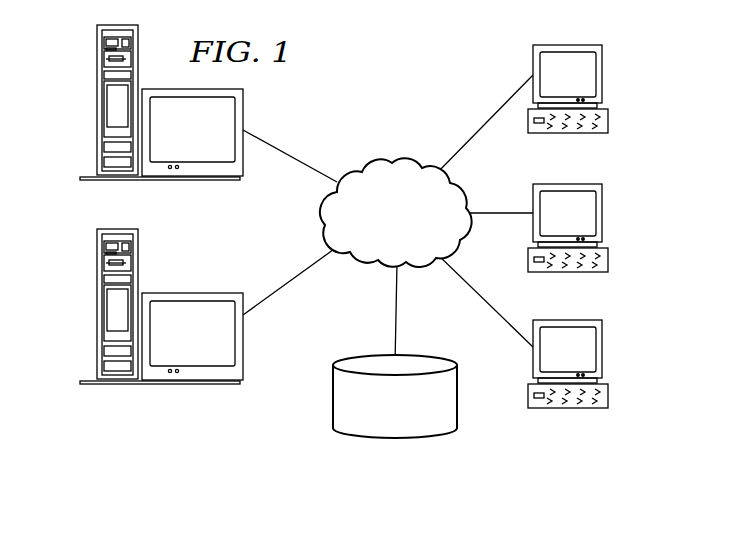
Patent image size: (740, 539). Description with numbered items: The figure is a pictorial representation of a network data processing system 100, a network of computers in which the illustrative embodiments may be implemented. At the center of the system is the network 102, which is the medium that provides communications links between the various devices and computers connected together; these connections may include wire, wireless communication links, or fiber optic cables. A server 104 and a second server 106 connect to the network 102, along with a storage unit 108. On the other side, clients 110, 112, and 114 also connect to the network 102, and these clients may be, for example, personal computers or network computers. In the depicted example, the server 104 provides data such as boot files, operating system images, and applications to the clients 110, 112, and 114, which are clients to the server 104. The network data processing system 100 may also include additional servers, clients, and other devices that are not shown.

The network data processing system 100 is at (444, 56).
The network 102 is at (372, 165).
The server 104 is at (97, 104).
The server 106 is at (97, 308).
The storage unit 108 is at (378, 438).
The client 110 is at (605, 73).
The client 112 is at (605, 212).
The client 114 is at (605, 350).